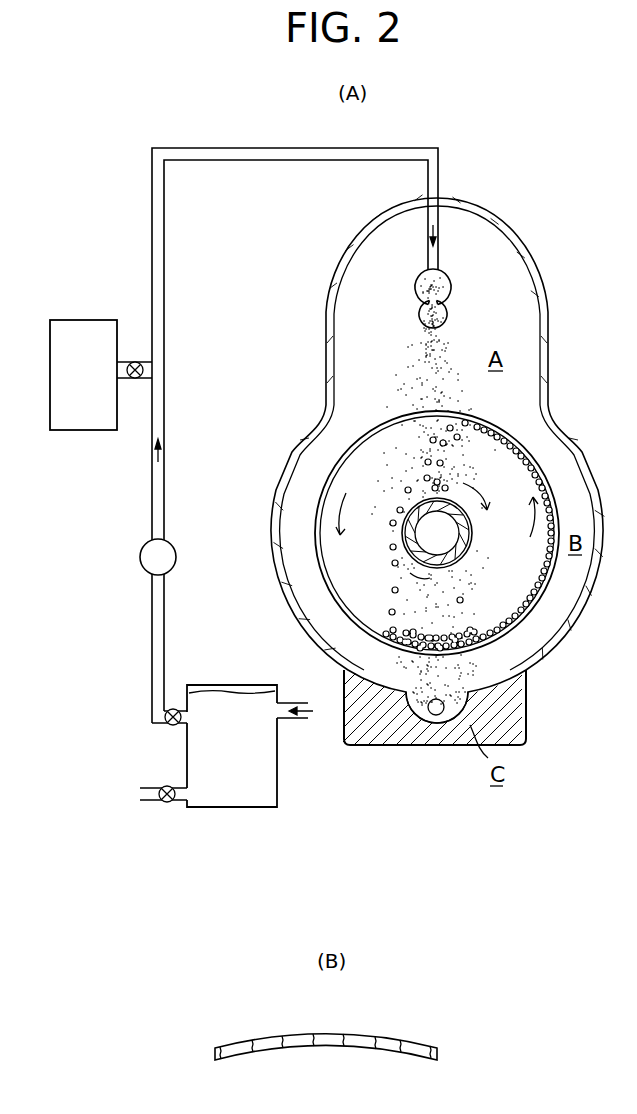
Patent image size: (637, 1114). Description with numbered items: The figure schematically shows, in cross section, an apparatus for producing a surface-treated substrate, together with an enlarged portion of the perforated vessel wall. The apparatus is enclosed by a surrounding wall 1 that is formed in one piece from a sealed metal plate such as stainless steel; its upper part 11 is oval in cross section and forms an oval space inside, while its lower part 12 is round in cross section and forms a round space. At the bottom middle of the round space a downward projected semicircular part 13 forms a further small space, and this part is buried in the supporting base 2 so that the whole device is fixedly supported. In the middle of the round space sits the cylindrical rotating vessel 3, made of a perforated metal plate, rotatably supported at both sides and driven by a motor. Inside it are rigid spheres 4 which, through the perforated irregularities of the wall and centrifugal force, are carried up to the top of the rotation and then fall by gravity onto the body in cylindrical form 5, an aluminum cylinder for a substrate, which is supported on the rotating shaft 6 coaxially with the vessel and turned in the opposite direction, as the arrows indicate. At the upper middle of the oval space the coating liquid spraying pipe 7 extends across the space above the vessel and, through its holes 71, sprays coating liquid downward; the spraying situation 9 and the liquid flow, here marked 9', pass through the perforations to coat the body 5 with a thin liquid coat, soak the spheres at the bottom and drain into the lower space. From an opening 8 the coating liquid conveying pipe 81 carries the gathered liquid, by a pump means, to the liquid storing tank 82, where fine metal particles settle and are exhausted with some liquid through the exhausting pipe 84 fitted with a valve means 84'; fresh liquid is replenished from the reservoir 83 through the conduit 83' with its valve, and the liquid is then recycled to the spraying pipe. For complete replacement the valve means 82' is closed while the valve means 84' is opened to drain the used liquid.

The surrounding wall 1 is at (548, 327).
The upper part 11 is at (332, 323).
The lower part 12 is at (272, 523).
The supporting base 2 is at (527, 720).
The cylindrical rotating vessel 3 is at (524, 447).
The rigid spheres 4 is at (468, 535).
The body in cylindrical form 5 is at (474, 534).
The rotating shaft 6 is at (418, 531).
The coating liquid spraying pipe 7 is at (450, 275).
The holes 71 is at (426, 305).
The opening 8 is at (436, 715).
The spraying situation of the coating liquid 9 is at (433, 491).
The powder flow 9' is at (474, 531).
The downward projected semicircular part 13 is at (409, 710).
The coating liquid conveying pipe 81 is at (197, 148).
The liquid storing tank 82 is at (232, 773).
The valve means 82' is at (143, 729).
The reservoir 83 is at (101, 402).
The conduit 83' is at (122, 326).
The exhausting pipe 84 is at (157, 816).
The valve means 84' is at (182, 824).